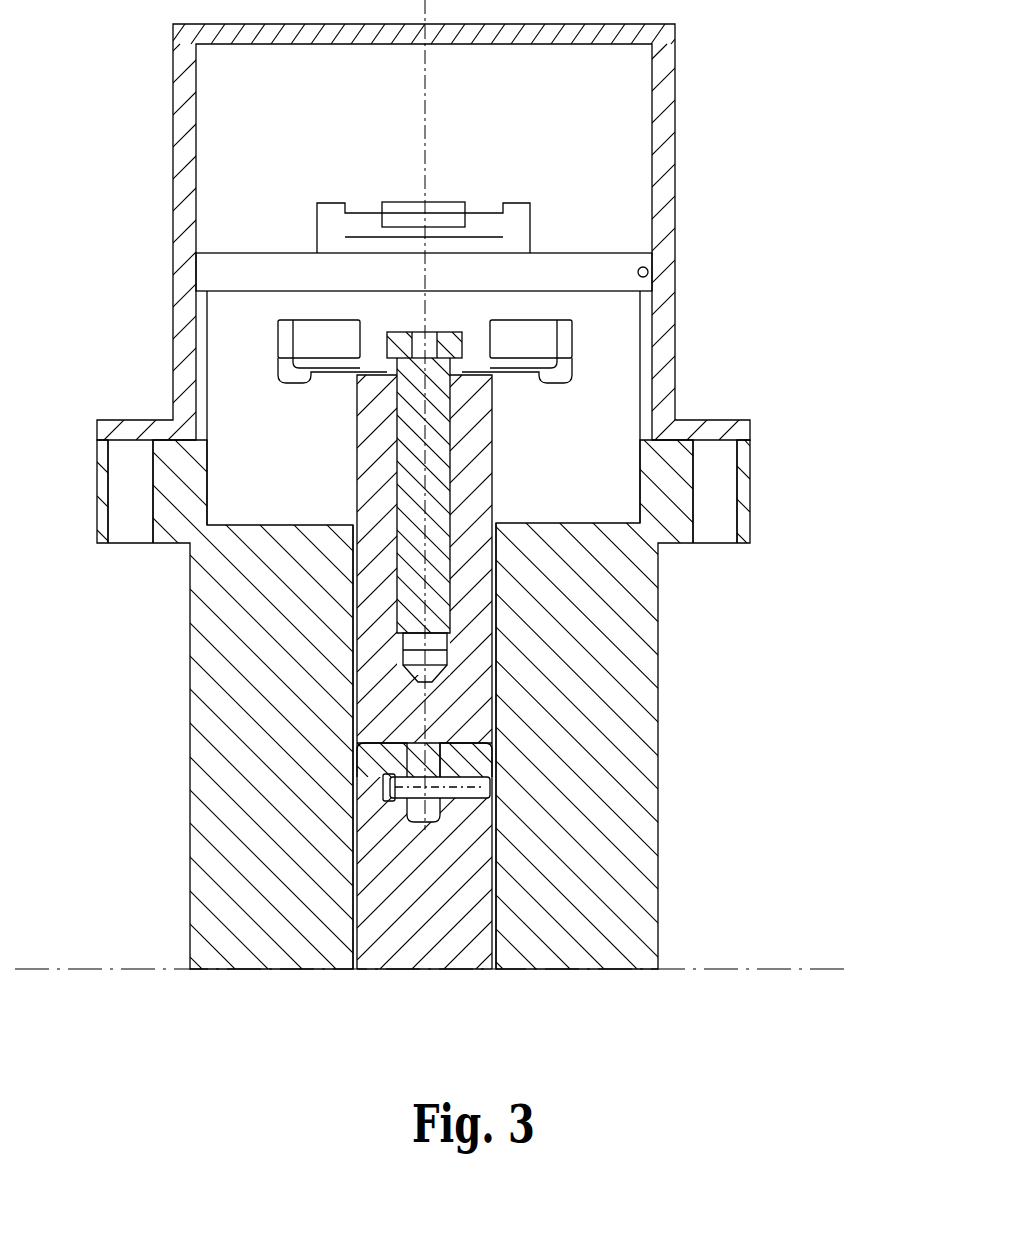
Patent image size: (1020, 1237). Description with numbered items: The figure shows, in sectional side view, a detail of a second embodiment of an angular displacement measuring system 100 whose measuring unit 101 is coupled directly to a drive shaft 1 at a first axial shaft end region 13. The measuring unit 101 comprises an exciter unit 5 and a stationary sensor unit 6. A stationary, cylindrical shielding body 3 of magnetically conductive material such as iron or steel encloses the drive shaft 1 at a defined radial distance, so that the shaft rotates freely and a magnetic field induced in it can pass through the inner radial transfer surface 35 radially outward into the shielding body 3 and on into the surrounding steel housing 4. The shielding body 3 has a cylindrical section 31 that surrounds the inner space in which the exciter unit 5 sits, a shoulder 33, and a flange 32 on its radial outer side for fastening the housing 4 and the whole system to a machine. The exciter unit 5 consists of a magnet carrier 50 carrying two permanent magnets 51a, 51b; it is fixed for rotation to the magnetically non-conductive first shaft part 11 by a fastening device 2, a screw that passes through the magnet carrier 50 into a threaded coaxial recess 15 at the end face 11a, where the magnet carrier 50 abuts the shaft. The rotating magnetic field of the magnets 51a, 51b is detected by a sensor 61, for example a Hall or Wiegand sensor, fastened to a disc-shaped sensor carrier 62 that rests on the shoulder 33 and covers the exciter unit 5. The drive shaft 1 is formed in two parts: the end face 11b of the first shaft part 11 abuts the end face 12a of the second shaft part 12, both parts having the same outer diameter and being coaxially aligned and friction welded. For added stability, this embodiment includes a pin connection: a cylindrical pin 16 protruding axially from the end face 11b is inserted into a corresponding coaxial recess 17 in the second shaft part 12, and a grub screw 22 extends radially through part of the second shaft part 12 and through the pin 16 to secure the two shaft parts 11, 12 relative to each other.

The drive shaft 1 is at (410, 612).
The fastening device 2 is at (460, 338).
The shielding body 3 is at (610, 627).
The housing 4 is at (660, 206).
The exciter unit 5 is at (328, 300).
The sensor unit 6 is at (375, 160).
The first shaft part 11 is at (395, 578).
The end face of the first shaft part facing the measuring unit 11a is at (355, 355).
The end face of the first shaft part averted from the measuring unit 11b is at (400, 778).
The second shaft part 12 is at (385, 882).
The end face of the second shaft part 12a is at (425, 770).
The first axial shaft end region 13 is at (518, 575).
The coaxial recess 15 is at (325, 755).
The pin 16 is at (448, 840).
The recess 17 is at (445, 748).
The grub screw 22 is at (470, 788).
The cylindrical section 31 is at (660, 330).
The flange 32 is at (752, 478).
The shoulder 33 is at (643, 272).
The inner radial transfer surface 35 is at (490, 895).
The magnet carrier 50 is at (577, 333).
The permanent magnet 51a is at (313, 340).
The permanent magnet 51b is at (522, 337).
The sensor 61 is at (438, 212).
The sensor carrier 62 is at (228, 270).
The angular displacement measuring system 100 is at (797, 177).
The measuring unit 101 is at (255, 101).